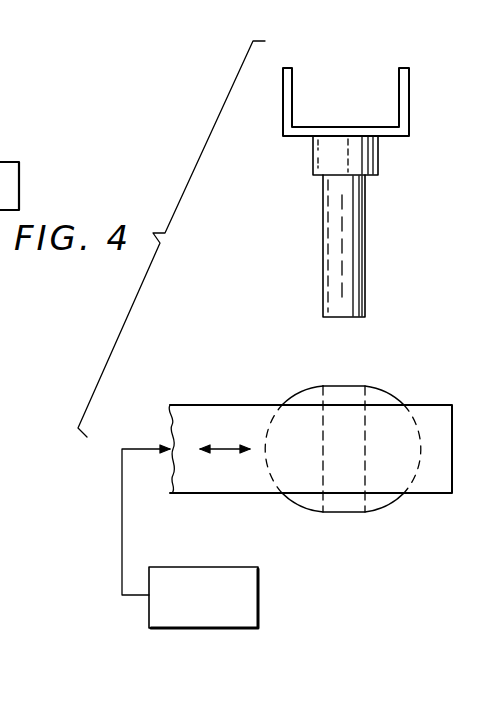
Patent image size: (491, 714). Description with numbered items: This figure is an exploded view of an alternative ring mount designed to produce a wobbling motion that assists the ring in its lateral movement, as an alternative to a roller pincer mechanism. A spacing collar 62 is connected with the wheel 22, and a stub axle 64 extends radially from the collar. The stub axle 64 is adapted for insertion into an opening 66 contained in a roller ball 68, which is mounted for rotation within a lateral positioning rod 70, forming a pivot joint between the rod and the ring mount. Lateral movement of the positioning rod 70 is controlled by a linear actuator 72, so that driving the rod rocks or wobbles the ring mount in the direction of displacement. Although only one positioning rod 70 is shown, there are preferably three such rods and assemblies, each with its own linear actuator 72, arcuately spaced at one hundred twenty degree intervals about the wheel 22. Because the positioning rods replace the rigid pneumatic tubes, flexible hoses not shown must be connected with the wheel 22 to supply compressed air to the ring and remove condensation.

The wheel 22 is at (397, 72).
The spacing collar 62 is at (318, 160).
The stub axle 64 is at (360, 257).
The opening 66 is at (334, 394).
The roller ball 68 is at (379, 394).
The lateral positioning rod 70 is at (418, 483).
The linear actuator 72 is at (182, 622).